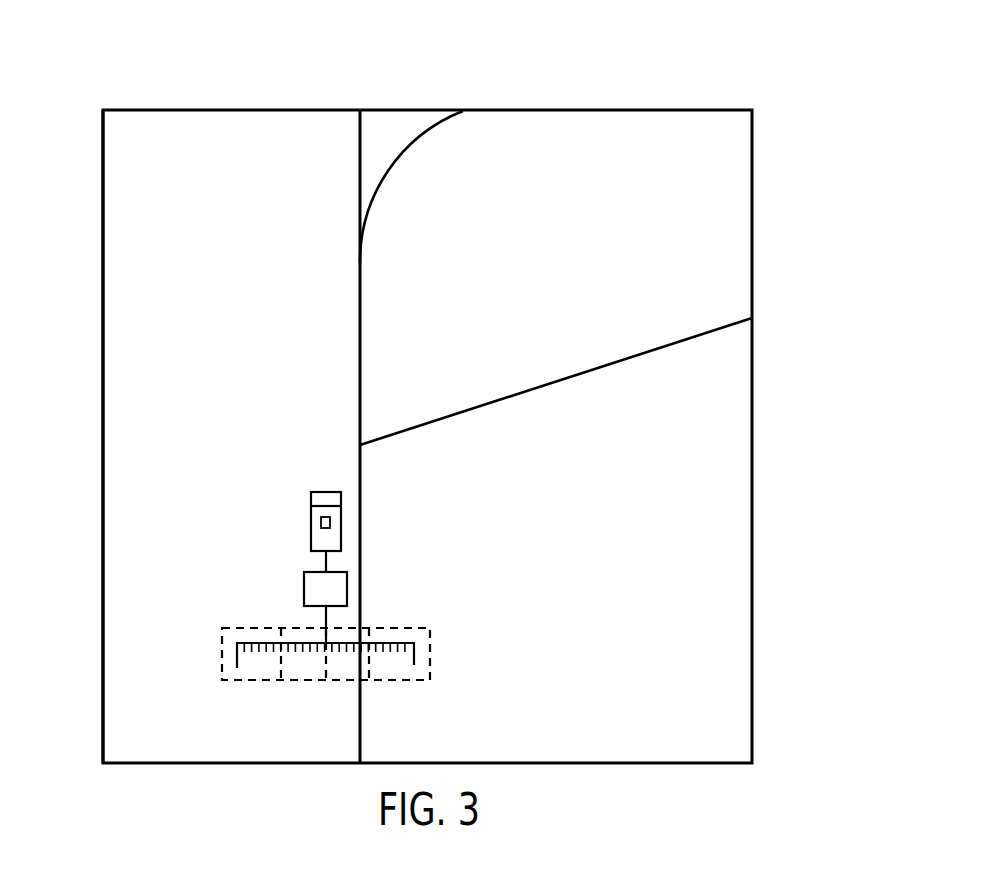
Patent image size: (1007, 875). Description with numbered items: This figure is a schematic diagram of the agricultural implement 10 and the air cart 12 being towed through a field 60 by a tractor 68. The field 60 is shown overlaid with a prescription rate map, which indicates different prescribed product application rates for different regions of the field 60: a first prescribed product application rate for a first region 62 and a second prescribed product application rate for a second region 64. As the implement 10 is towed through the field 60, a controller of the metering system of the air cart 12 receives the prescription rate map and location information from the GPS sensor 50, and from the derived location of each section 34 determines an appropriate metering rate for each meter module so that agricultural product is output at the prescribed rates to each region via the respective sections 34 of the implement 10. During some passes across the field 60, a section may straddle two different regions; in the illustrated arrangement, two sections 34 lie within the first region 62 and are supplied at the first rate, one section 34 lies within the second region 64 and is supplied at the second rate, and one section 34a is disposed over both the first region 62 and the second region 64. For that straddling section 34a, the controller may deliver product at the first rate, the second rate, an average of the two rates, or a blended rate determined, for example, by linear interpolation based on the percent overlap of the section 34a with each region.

The agricultural implement 10 is at (346, 578).
The air cart 12 is at (379, 555).
The section 34 is at (238, 683).
The section straddling two regions 34a is at (344, 683).
The GPS sensor 50 is at (321, 520).
The field 60 is at (777, 206).
The first region 62 is at (147, 372).
The second region 64 is at (713, 643).
The tractor 68 is at (289, 462).